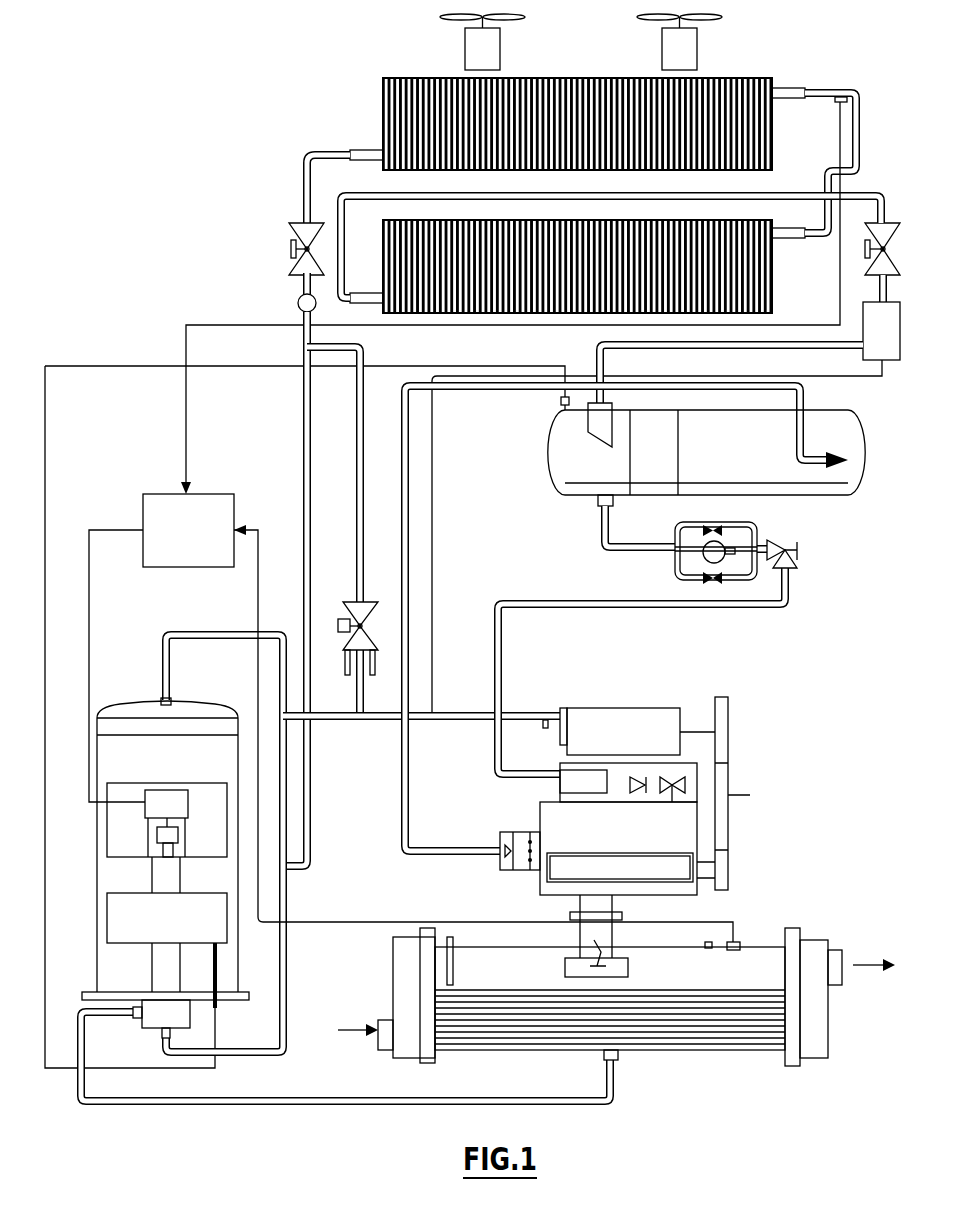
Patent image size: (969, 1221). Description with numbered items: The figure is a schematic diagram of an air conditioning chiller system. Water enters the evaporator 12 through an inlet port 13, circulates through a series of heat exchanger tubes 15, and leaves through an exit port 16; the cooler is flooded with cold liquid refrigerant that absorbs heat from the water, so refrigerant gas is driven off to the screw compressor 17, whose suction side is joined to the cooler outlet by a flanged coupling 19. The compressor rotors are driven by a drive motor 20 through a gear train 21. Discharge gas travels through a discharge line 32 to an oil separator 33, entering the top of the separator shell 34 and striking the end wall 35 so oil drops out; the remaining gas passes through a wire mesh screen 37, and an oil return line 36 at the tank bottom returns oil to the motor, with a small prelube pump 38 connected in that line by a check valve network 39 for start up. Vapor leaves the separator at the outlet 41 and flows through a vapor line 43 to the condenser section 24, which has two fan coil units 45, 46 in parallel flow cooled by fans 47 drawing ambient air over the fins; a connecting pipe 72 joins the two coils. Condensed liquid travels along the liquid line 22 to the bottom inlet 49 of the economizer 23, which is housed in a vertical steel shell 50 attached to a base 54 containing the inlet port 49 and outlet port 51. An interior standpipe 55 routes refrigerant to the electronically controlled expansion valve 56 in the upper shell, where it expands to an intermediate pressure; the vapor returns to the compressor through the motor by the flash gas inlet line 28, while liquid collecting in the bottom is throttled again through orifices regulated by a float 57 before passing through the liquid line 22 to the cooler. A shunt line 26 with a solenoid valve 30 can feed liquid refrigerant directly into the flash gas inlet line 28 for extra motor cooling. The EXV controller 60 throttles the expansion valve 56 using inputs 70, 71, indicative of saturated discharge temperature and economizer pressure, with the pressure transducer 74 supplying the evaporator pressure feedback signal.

The evaporator 12 is at (587, 1009).
The inlet port 13 is at (360, 1020).
The heat exchanger tubes 15 is at (775, 1040).
The exit port 16 is at (842, 950).
The compressor 17 is at (525, 885).
The flanged coupling 19 is at (613, 938).
The drive motor 20 is at (598, 708).
The gear train 21 is at (752, 746).
The liquid line 22 is at (303, 406).
The economizer 23 is at (184, 877).
The condenser section 24 is at (614, 186).
The shunt line 26 is at (366, 560).
The flash gas inlet line 28 is at (466, 722).
The solenoid valve 30 is at (368, 633).
The discharge line 32 is at (412, 478).
The oil separator 33 is at (725, 461).
The separator shell 34 is at (850, 502).
The end wall 35 is at (848, 424).
The oil return line 36 is at (645, 552).
The wire mesh screen 37 is at (680, 463).
The prelube pump 38 is at (702, 562).
The check valve network 39 is at (731, 555).
The outlet 41 is at (614, 415).
The vapor line 43 is at (758, 349).
The fan coil unit 45 is at (480, 318).
The fan coil unit 46 is at (383, 106).
The fans 47 is at (500, 50).
The bottom inlet 49 is at (172, 1042).
The steel shell 50 is at (97, 770).
The outlet port 51 is at (137, 1020).
The base 54 is at (122, 992).
The interior standpipe 55 is at (182, 972).
The electronically controlled expansion valve 56 is at (190, 812).
The float 57 is at (228, 916).
The EXV controller 60 is at (196, 574).
The input 70 is at (200, 480).
The input 71 is at (246, 530).
The coil connecting pipe 72 is at (850, 108).
The pressure transducer 74 is at (736, 940).